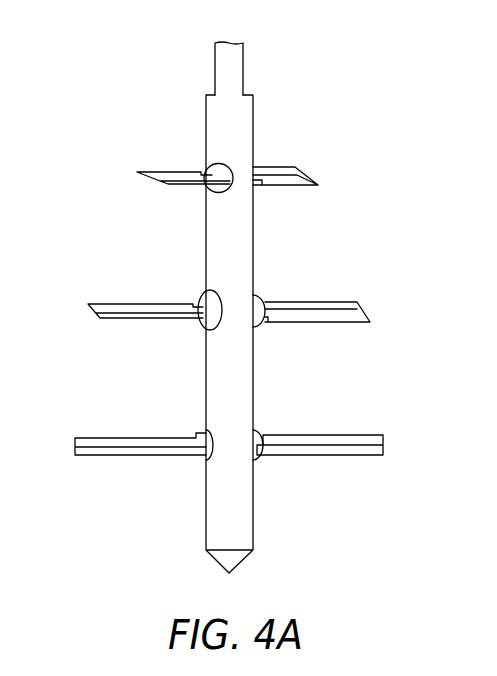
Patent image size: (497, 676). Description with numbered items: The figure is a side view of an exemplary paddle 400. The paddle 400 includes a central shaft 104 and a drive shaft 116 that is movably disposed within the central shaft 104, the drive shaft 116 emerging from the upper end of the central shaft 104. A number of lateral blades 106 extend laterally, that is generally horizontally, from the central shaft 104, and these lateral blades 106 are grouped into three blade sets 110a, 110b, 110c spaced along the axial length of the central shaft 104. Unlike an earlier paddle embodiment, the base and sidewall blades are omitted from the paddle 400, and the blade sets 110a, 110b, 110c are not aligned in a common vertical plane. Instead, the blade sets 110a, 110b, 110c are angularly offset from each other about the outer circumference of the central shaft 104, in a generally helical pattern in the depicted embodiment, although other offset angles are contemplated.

The paddle 400 is at (58, 139).
The drive shaft 116 is at (230, 73).
The central shaft 104 is at (217, 136).
The lateral blades 106 is at (170, 184).
The first blade set 110a is at (352, 169).
The second blade set 110b is at (343, 286).
The third blade set 110c is at (343, 418).